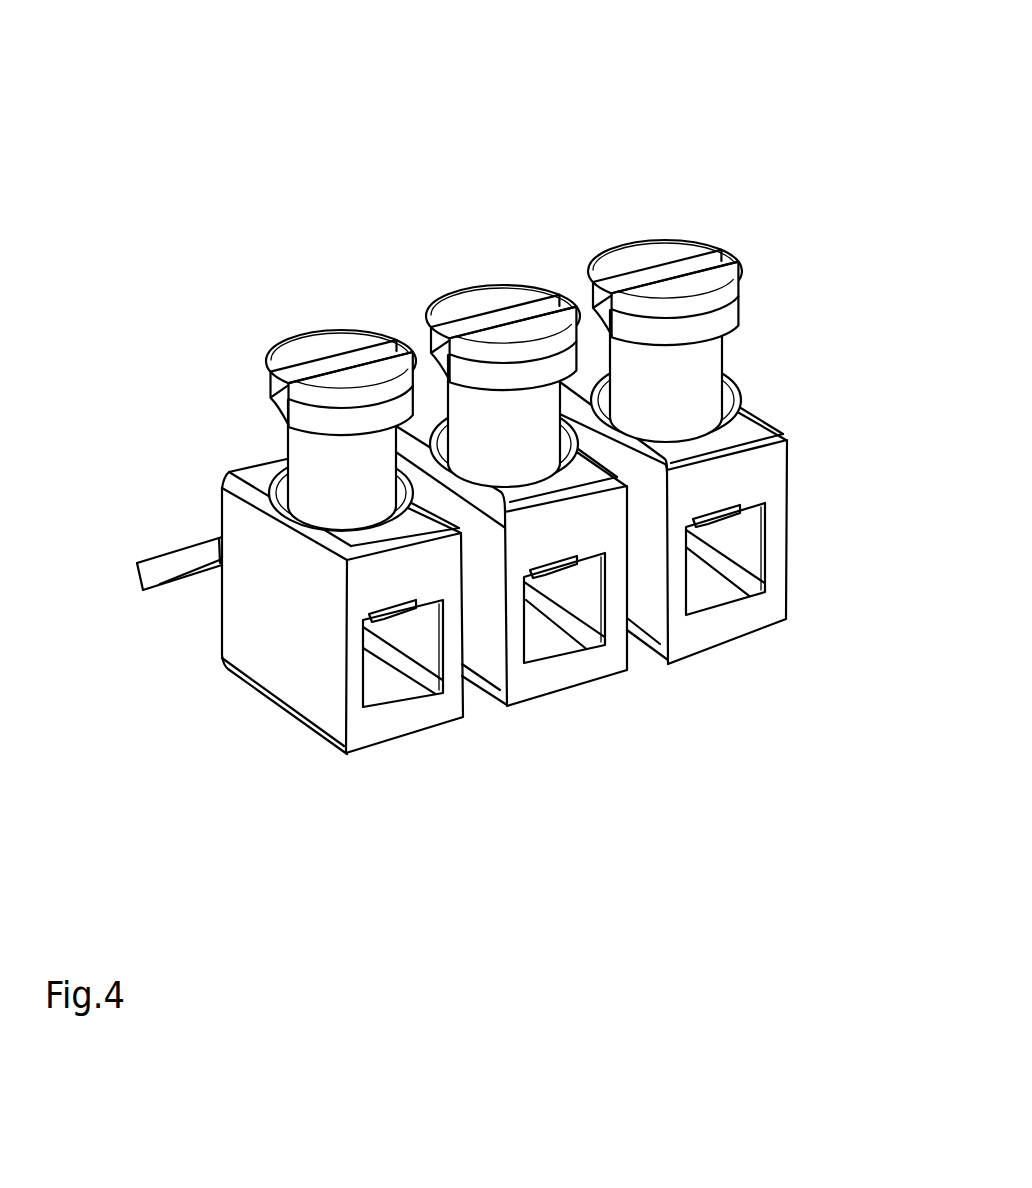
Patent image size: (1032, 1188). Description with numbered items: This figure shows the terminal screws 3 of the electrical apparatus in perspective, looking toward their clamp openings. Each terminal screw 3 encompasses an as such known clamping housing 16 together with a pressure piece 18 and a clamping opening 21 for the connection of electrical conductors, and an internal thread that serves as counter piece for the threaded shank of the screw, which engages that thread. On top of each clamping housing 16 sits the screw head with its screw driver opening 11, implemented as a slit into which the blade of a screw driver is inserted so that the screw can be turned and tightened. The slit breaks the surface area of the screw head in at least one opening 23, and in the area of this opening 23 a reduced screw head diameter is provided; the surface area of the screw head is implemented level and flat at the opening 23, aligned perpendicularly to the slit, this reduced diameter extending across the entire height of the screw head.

The terminal screw 3 is at (507, 453).
The screw driver opening 11 is at (660, 273).
The clamping housing 16 is at (713, 630).
The pressure piece 18 is at (195, 555).
The clamping opening 21 is at (713, 578).
The opening 23 is at (268, 398).